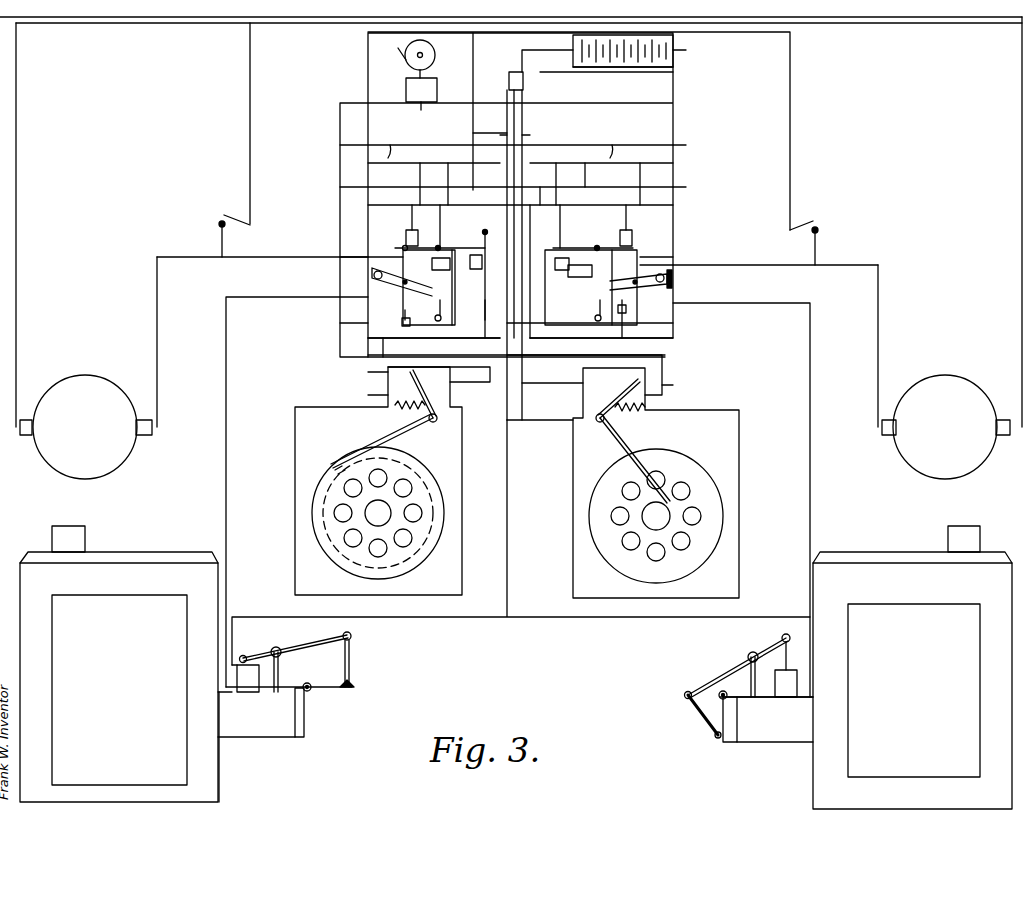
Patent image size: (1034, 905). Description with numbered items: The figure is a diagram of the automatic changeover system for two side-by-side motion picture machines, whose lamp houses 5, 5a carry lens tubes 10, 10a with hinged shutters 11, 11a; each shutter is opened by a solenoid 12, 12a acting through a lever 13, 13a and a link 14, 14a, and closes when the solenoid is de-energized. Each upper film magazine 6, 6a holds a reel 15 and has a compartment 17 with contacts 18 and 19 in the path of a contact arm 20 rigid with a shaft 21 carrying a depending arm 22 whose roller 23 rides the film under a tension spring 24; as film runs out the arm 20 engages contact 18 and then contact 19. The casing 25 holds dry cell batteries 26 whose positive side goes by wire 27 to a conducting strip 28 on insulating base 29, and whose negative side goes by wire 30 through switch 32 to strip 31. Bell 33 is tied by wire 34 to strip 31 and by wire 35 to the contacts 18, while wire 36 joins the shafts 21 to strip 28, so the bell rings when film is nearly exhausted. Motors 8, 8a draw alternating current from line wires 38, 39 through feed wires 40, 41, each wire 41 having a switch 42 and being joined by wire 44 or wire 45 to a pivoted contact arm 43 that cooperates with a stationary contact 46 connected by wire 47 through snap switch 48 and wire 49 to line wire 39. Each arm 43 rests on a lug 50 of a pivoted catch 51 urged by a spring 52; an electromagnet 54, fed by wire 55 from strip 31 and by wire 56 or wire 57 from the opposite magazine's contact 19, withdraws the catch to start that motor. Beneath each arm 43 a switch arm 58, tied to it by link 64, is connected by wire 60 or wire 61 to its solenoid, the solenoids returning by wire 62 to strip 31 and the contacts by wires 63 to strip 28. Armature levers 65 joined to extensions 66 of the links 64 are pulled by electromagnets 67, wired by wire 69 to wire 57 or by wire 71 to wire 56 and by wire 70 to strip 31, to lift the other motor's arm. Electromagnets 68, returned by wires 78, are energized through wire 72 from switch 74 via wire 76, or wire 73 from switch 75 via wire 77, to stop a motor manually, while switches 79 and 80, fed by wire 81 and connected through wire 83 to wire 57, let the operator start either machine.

The lamp house 5 is at (157, 664).
The lamp house 5a is at (874, 667).
The upper film magazine 6 is at (295, 460).
The upper film magazine 6a is at (739, 462).
The actuating motor 8 is at (88, 368).
The actuating motor 8a is at (944, 372).
The lens tube 10 is at (246, 730).
The lens tube 10a is at (764, 735).
The shutter 11 is at (322, 692).
The shutter 11a is at (715, 722).
The solenoid 12 is at (259, 676).
The solenoid 12a is at (775, 680).
The lever 13 is at (322, 626).
The lever 13a is at (778, 640).
The link 14 is at (352, 660).
The link 14a is at (684, 700).
The reel 15 is at (437, 535).
The compartment 17 is at (450, 376).
The contact 18 is at (495, 394).
The contact 19 is at (494, 414).
The contact arm 20 is at (521, 379).
The shaft 21 is at (433, 422).
The depending arm 22 is at (390, 442).
The anti-friction roller 23 is at (330, 462).
The tension spring 24 is at (530, 417).
The cabinet or casing 25 is at (673, 120).
The dry cell batteries 26 is at (626, 67).
The wire 27 is at (542, 52).
The conducting strip 28 is at (523, 105).
The base of insulation 29 is at (530, 135).
The wire 30 is at (588, 67).
The conducting strip 31 is at (490, 133).
The manually operable switch 32 is at (682, 60).
The electric bell 33 is at (437, 62).
The wire 34 is at (428, 110).
The wire 35 is at (340, 140).
The wire 36 is at (522, 405).
The line wire 38 is at (74, 19).
The line wire 39 is at (140, 24).
The feed wire 40 is at (16, 205).
The feed wire 41 is at (250, 143).
The manually operable switch 42 is at (232, 218).
The contact arm 43 is at (506, 250).
The wire 44 is at (262, 262).
The wire 45 is at (735, 268).
The stationary contact 46 is at (520, 317).
The wire 47 is at (516, 294).
The snap switch 48 is at (485, 232).
The wire 49 is at (473, 70).
The supporting lug 50 is at (520, 287).
The pivoted catch 51 is at (514, 239).
The spring 52 is at (518, 310).
The electromagnet 54 is at (526, 287).
The wire 55 is at (517, 273).
The wire 56 is at (515, 341).
The wire 57 is at (456, 330).
The switch arm 58 is at (521, 319).
The wire 60 is at (226, 328).
The wire 61 is at (810, 405).
The wire 62 is at (507, 580).
The wire 63 is at (520, 330).
The link connection 64 is at (522, 286).
The armature lever 65 is at (503, 226).
The extension 66 is at (398, 258).
The electromagnet 67 is at (512, 262).
The electromagnet 68 is at (406, 238).
The wire 69 is at (473, 312).
The wire 70 is at (533, 220).
The wire 71 is at (536, 271).
The wire 72 is at (424, 172).
The wire 73 is at (640, 184).
The switch 74 is at (340, 190).
The switch 75 is at (686, 190).
The wire 76 is at (442, 163).
The wire 77 is at (550, 189).
The wire 78 is at (508, 194).
The switch 79 is at (340, 163).
The switch 80 is at (686, 155).
The wire 81 is at (506, 141).
The wire 83 is at (583, 177).